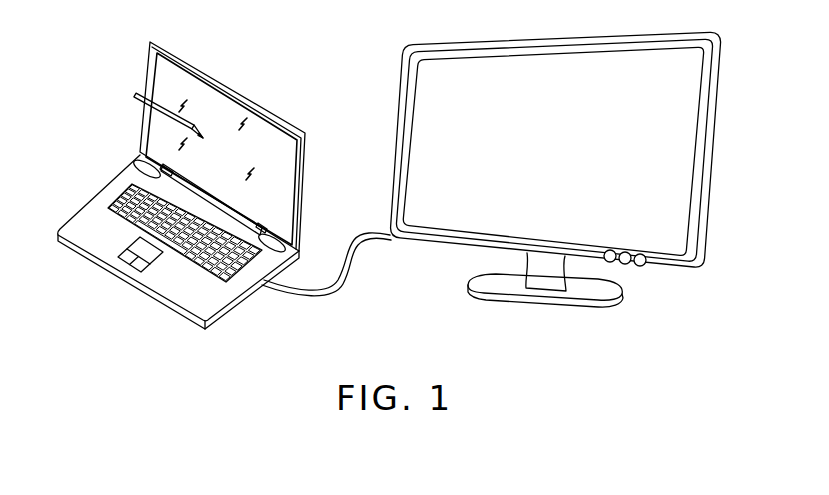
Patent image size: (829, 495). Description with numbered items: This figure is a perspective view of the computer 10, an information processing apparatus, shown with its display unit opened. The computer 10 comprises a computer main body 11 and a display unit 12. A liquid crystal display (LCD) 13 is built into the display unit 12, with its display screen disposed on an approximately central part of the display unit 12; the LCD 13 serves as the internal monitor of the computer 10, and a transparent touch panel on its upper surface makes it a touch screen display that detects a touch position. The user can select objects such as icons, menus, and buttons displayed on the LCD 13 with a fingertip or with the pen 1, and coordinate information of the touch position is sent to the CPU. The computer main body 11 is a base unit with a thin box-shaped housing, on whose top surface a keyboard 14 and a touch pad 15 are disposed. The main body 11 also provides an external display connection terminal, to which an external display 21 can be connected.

The pen 1 is at (133, 98).
The computer 10 is at (117, 147).
The computer main body 11 is at (80, 210).
The display unit 12 is at (148, 73).
The liquid crystal display (LCD) 13 is at (283, 174).
The keyboard 14 is at (243, 270).
The touch pad 15 is at (156, 250).
The external display 21 is at (711, 209).